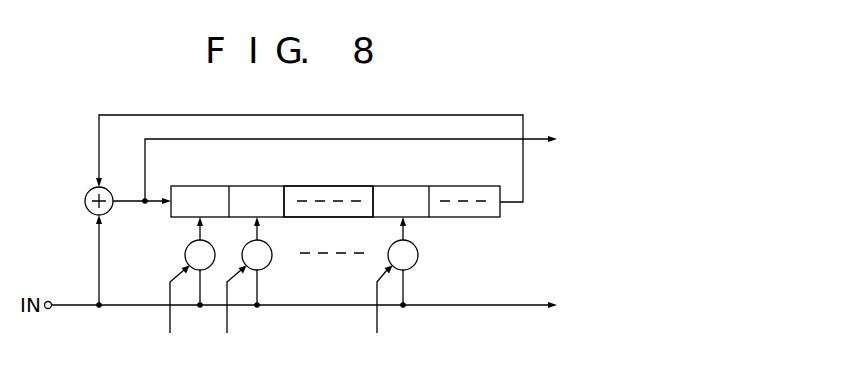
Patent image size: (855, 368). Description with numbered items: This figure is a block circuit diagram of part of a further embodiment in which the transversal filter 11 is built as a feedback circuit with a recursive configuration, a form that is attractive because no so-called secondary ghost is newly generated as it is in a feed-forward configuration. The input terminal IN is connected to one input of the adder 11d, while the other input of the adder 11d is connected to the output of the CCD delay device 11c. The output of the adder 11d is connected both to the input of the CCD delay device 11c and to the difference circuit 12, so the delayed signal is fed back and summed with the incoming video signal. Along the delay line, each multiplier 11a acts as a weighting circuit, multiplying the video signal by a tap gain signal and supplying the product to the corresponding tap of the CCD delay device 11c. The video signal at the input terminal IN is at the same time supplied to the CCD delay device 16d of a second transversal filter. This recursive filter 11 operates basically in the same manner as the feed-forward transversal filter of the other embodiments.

The transversal filter 11 is at (252, 170).
The multiplier 11a is at (268, 265).
The CCD delay device 11c is at (300, 184).
The adder 11d is at (85, 203).
The difference circuit 12 is at (419, 153).
The CCD delay device 16d is at (630, 309).